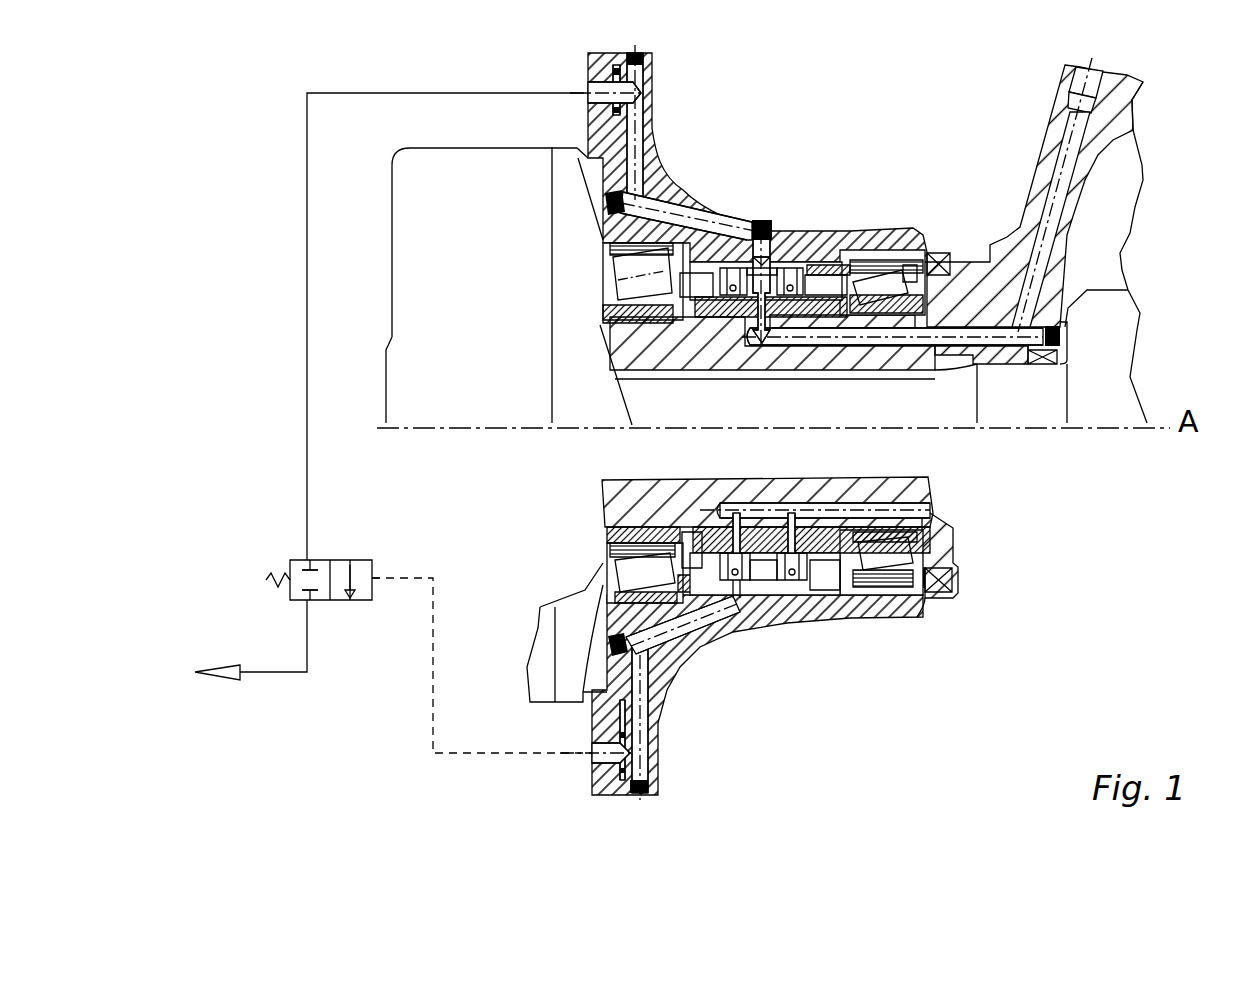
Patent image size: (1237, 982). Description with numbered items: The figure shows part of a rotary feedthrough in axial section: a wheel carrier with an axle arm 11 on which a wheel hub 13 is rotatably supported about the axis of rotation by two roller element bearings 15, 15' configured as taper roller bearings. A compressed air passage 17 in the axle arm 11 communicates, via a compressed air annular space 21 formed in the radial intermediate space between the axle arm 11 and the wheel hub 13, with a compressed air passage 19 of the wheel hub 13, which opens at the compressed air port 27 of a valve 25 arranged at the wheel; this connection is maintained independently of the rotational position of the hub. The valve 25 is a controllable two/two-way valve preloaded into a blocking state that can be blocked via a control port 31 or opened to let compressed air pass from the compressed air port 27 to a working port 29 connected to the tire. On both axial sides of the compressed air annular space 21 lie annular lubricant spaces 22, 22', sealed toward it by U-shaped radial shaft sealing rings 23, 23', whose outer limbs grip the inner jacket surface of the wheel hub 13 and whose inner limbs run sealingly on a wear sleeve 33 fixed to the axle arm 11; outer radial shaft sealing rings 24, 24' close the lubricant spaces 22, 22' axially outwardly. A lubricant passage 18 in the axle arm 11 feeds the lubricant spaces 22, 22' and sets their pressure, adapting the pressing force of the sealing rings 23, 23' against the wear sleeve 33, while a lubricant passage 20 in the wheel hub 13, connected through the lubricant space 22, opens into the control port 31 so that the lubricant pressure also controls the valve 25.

The axle arm 11 is at (968, 310).
The wheel hub 13 is at (828, 268).
The roller element bearing 15 is at (660, 424).
The roller element bearing 15' is at (885, 421).
The compressed air passage 17 is at (940, 300).
The lubricant passage 18 is at (868, 512).
The compressed air passage 19 is at (307, 287).
The lubricant passage 20 is at (432, 663).
The compressed air annular space 21 is at (787, 268).
The annular lubricant space 22 is at (761, 625).
The annular lubricant space 22' is at (805, 619).
The radial shaft sealing ring 23 is at (753, 265).
The radial shaft sealing ring 23' is at (790, 229).
The radial shaft sealing ring 24 is at (751, 590).
The radial shaft sealing ring 24' is at (816, 607).
The valve 25 is at (336, 560).
The compressed air port 27 is at (311, 548).
The working port 29 is at (321, 604).
The control port 31 is at (385, 582).
The wear sleeve 33 is at (852, 300).